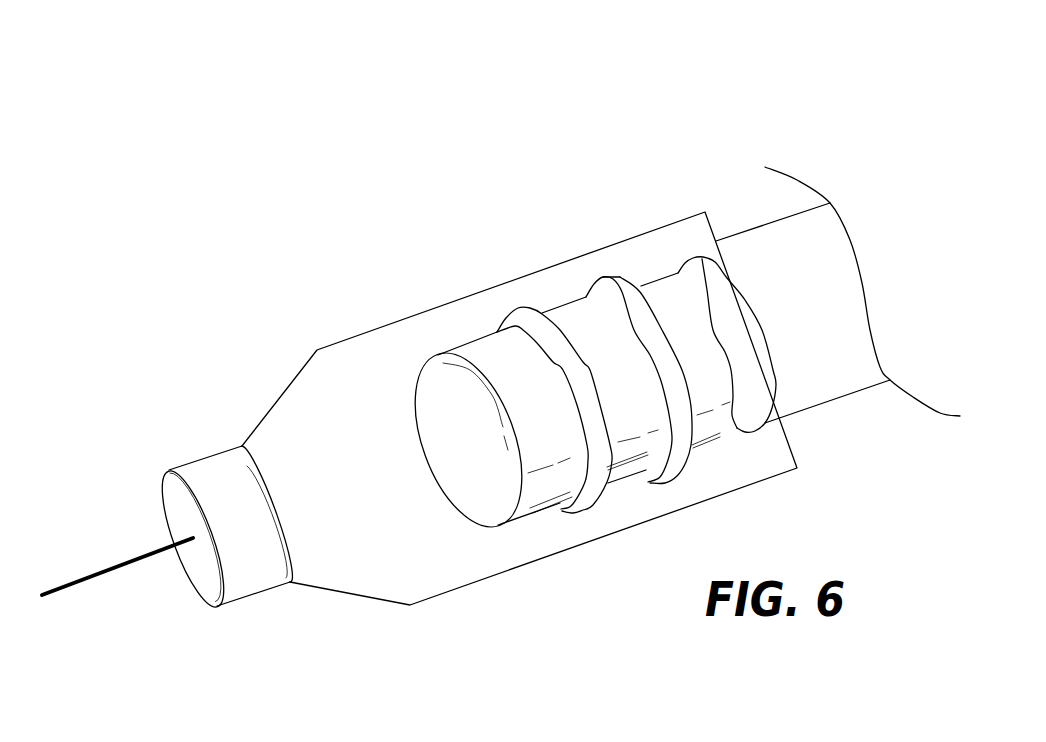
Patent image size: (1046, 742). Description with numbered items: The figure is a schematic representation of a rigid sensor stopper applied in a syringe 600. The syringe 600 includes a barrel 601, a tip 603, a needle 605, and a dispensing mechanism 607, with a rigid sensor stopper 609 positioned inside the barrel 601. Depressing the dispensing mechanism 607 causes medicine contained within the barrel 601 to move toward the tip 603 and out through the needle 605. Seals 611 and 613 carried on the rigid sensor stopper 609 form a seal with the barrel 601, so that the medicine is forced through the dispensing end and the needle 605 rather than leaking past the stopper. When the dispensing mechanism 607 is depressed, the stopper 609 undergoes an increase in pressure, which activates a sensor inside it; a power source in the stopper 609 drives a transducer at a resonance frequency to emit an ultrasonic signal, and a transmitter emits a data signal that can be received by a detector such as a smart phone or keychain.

The syringe 600 is at (489, 68).
The barrel 601 is at (513, 548).
The tip 603 is at (248, 567).
The needle 605 is at (107, 573).
The dispensing mechanism 607 is at (802, 368).
The rigid sensor stopper 609 is at (486, 343).
The seal 611 is at (524, 315).
The seal 613 is at (593, 285).